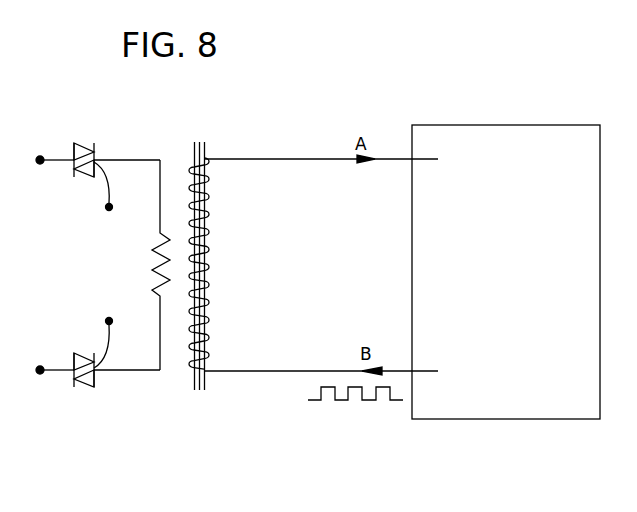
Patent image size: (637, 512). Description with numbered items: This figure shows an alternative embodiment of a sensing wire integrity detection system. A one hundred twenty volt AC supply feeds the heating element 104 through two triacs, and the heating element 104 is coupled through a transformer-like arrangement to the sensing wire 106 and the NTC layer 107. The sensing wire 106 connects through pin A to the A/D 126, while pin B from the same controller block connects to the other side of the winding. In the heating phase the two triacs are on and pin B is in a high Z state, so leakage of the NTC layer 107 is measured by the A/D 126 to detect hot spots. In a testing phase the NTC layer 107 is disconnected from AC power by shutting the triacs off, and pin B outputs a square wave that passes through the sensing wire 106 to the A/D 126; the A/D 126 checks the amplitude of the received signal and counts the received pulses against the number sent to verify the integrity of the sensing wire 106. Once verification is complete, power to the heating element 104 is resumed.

The heating element 104 is at (148, 262).
The sensing wire 106 is at (174, 140).
The NTC layer 107 is at (201, 400).
The A/D 126 is at (553, 125).